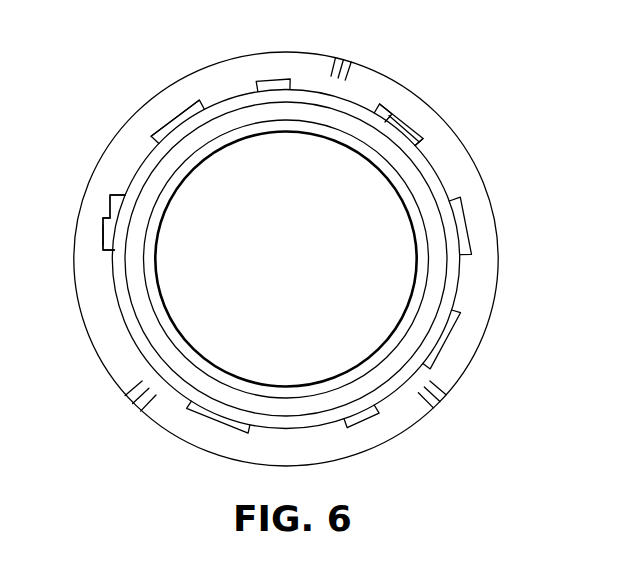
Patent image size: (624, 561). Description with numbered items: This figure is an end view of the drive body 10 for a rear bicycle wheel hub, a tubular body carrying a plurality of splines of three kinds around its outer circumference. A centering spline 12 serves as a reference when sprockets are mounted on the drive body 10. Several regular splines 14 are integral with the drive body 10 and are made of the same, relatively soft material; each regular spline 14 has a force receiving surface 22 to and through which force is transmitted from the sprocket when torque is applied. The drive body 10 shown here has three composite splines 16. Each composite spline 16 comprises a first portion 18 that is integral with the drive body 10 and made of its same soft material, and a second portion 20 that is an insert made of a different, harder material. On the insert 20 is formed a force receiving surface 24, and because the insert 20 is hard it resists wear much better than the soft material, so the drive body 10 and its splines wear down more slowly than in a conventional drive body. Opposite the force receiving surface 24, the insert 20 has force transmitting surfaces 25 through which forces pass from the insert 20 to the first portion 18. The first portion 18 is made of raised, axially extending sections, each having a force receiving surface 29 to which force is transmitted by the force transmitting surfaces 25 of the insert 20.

The drive body 10 is at (500, 282).
The centering spline 12 is at (271, 79).
The regular spline 14 is at (175, 118).
The composite spline 16 is at (427, 140).
The first portion 18 is at (418, 124).
The second portion 20 is at (393, 112).
The force receiving surface 22 is at (150, 147).
The force receiving surface 24 is at (109, 251).
The force transmitting surface 25 is at (112, 196).
The force receiving surface 29 is at (385, 104).